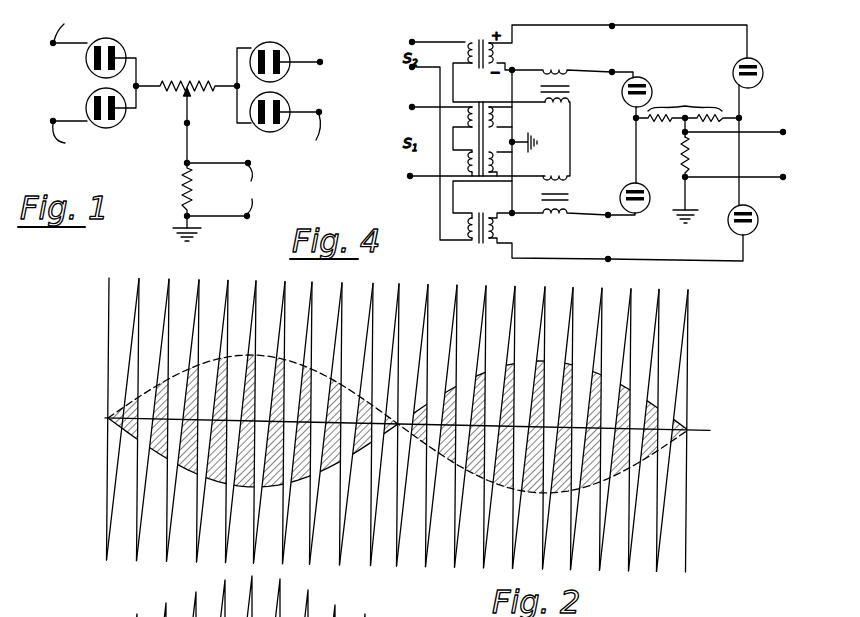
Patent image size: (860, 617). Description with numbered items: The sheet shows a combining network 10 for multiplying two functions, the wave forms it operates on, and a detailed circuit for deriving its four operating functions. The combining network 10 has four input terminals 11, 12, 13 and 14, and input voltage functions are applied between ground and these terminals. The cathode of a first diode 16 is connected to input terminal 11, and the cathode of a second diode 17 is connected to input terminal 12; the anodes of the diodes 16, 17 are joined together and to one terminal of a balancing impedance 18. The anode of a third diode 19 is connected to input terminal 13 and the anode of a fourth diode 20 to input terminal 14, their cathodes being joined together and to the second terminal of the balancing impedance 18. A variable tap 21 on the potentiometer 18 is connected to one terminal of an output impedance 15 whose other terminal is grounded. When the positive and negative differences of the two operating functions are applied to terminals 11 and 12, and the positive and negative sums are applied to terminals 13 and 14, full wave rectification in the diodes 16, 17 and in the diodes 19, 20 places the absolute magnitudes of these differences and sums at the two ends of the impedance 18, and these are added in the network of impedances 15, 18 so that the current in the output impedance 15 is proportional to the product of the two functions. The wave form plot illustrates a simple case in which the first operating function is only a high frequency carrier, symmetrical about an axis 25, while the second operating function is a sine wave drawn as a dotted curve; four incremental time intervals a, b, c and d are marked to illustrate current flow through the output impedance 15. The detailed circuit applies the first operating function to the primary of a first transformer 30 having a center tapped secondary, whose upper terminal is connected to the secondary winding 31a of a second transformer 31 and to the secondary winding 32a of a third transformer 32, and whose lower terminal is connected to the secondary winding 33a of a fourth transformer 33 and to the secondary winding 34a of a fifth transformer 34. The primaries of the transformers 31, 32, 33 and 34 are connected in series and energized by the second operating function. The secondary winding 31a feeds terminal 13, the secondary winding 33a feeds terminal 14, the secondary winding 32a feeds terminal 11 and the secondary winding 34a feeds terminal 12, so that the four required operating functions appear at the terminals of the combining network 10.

In FIG. 1, the combining network 10 is at (191, 124).
In FIG. 1, the input terminal 11 is at (53, 44).
In FIG. 4, the input terminal 11 is at (621, 64).
In FIG. 1, the input terminal 12 is at (53, 119).
In FIG. 4, the input terminal 12 is at (608, 217).
In FIG. 1, the input terminal 13 is at (312, 32).
In FIG. 4, the input terminal 13 is at (613, 25).
In FIG. 1, the input terminal 14 is at (321, 113).
In FIG. 4, the input terminal 14 is at (608, 261).
In FIG. 1, the output impedance 15 is at (192, 192).
In FIG. 4, the output impedance 15 is at (690, 157).
In FIG. 1, the first diode 16 is at (126, 48).
In FIG. 4, the first diode 16 is at (651, 83).
In FIG. 1, the second diode 17 is at (126, 113).
In FIG. 4, the second diode 17 is at (650, 198).
In FIG. 1, the balancing impedance 18 is at (175, 82).
In FIG. 4, the balancing impedance 18 is at (688, 106).
In FIG. 1, the third diode 19 is at (290, 72).
In FIG. 1, the fourth diode 20 is at (290, 100).
In FIG. 1, the variable tap 21 is at (189, 108).
In FIG. 2, the axis 25 is at (108, 417).
In FIG. 4, the first transformer 30 is at (484, 122).
In FIG. 4, the second transformer 31 is at (482, 42).
In FIG. 4, the secondary winding 31a is at (497, 52).
In FIG. 4, the third transformer 32 is at (569, 96).
In FIG. 4, the secondary winding 32a is at (553, 70).
In FIG. 4, the fourth transformer 33 is at (478, 244).
In FIG. 4, the secondary winding 33a is at (497, 228).
In FIG. 4, the fifth transformer 34 is at (568, 189).
In FIG. 4, the secondary winding 34a is at (556, 215).
In FIG. 2, the incremental time interval a is at (256, 283).
In FIG. 2, the incremental time interval b is at (258, 360).
In FIG. 2, the incremental time interval c is at (248, 486).
In FIG. 2, the incremental time interval d is at (254, 538).